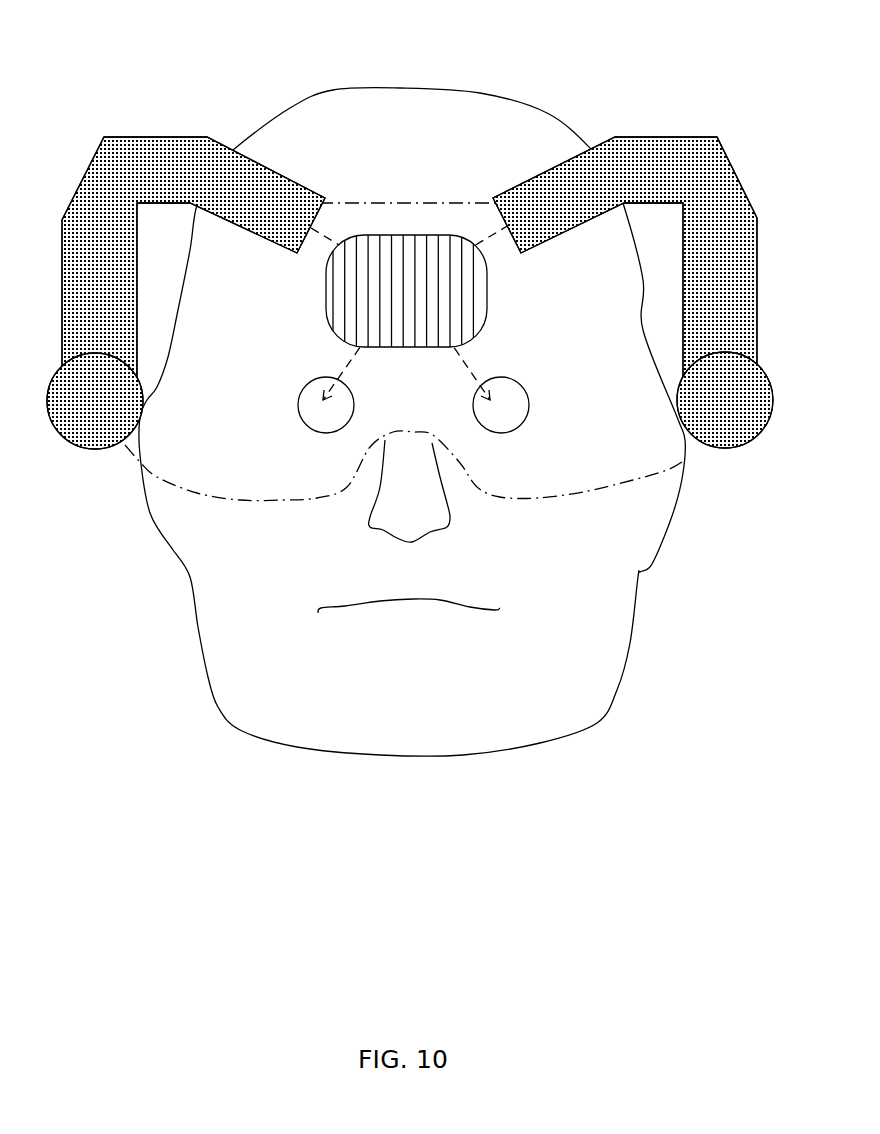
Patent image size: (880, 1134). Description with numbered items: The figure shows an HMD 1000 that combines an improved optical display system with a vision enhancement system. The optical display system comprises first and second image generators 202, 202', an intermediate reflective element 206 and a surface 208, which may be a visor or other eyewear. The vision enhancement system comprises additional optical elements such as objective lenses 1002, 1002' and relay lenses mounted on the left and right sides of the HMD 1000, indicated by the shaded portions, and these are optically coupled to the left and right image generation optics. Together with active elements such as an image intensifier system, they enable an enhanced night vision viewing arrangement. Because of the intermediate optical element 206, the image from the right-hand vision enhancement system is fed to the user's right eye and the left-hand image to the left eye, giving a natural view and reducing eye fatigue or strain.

The HMD 1000 is at (402, 259).
The first image generator 202 is at (208, 257).
The second image generator 202' is at (625, 250).
The intermediate reflective element 206 is at (417, 280).
The surface 208 is at (633, 463).
The objective lens 1002 is at (79, 432).
The objective lens 1002' is at (733, 425).